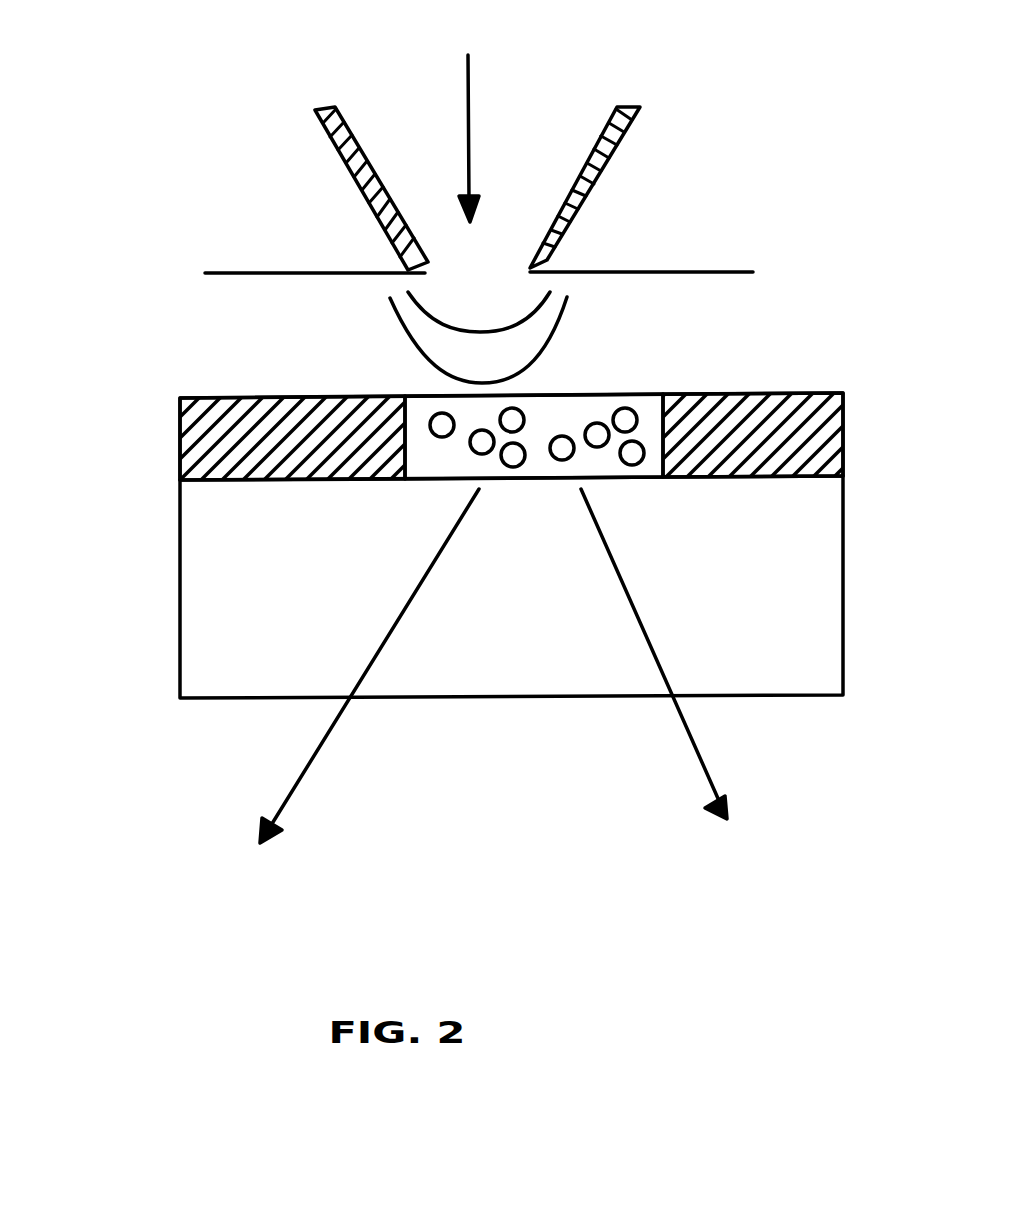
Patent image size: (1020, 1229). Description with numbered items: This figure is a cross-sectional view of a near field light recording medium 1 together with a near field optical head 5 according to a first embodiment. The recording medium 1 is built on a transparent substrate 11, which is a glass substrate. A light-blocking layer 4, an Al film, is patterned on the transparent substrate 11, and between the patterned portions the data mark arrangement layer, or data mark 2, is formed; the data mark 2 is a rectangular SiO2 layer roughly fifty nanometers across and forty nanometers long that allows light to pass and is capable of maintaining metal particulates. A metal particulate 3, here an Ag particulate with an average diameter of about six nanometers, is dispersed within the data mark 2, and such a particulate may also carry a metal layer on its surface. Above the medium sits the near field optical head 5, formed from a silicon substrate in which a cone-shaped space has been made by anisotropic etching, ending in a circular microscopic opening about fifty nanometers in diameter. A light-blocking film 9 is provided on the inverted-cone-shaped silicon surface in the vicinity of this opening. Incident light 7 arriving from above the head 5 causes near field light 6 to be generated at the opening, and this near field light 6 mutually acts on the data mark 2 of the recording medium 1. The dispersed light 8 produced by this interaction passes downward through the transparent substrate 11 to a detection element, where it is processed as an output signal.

The near field light recording medium 1 is at (850, 688).
The data mark arrangement layer 2 is at (590, 407).
The metal particulate 3 is at (640, 446).
The light-blocking layer 4 is at (180, 460).
The near field optical head 5 is at (807, 270).
The near field light 6 is at (405, 325).
The incident light 7 is at (467, 117).
The dispersed light 8 is at (488, 690).
The light-blocking film 9 is at (325, 108).
The transparent substrate 11 is at (215, 631).